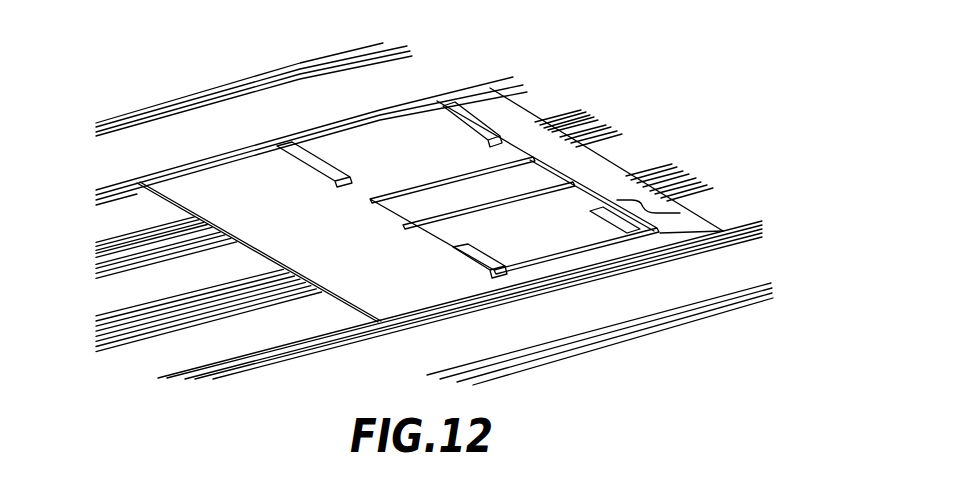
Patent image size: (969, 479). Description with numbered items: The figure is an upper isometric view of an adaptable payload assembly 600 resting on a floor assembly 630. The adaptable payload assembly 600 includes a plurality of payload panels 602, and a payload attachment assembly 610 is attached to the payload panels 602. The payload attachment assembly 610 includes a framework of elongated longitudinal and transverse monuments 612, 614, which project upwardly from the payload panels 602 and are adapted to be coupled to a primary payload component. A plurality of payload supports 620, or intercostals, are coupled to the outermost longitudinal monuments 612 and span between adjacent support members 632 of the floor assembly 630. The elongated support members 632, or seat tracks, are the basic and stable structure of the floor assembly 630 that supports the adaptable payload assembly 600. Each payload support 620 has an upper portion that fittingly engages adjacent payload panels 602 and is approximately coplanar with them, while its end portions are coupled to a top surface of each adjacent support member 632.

The adaptable payload assembly 600 is at (592, 80).
The payload panels 602 is at (265, 175).
The payload attachment assembly 610 is at (596, 172).
The longitudinal monuments 612 is at (385, 122).
The transverse monuments 614 is at (678, 212).
The payload supports 620 is at (323, 167).
The floor assembly 630 is at (87, 190).
The support members 632 is at (92, 272).